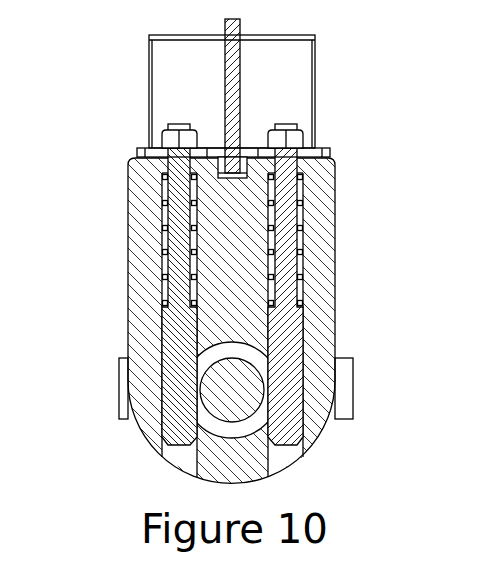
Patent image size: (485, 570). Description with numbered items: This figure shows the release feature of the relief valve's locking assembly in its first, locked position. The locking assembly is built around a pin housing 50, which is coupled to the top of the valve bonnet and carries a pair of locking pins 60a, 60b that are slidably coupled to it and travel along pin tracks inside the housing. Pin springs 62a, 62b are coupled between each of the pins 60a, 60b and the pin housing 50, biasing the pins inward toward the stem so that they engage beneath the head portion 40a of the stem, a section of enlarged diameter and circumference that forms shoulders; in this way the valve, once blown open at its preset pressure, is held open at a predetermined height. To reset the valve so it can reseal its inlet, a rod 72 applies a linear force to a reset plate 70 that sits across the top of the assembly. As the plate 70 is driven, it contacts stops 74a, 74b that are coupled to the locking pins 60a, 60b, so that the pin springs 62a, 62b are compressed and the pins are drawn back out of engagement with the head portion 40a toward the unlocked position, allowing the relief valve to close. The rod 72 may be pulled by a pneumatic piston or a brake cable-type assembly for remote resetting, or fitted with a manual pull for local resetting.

The pin housing 50 is at (323, 343).
The head portion 40a is at (240, 395).
The locking pin 60a is at (287, 216).
The locking pin 60b is at (180, 216).
The pin spring 62a is at (300, 252).
The pin spring 62b is at (167, 252).
The reset plate 70 is at (147, 154).
The rod 72 is at (233, 73).
The stop 74a is at (292, 138).
The stop 74b is at (170, 138).